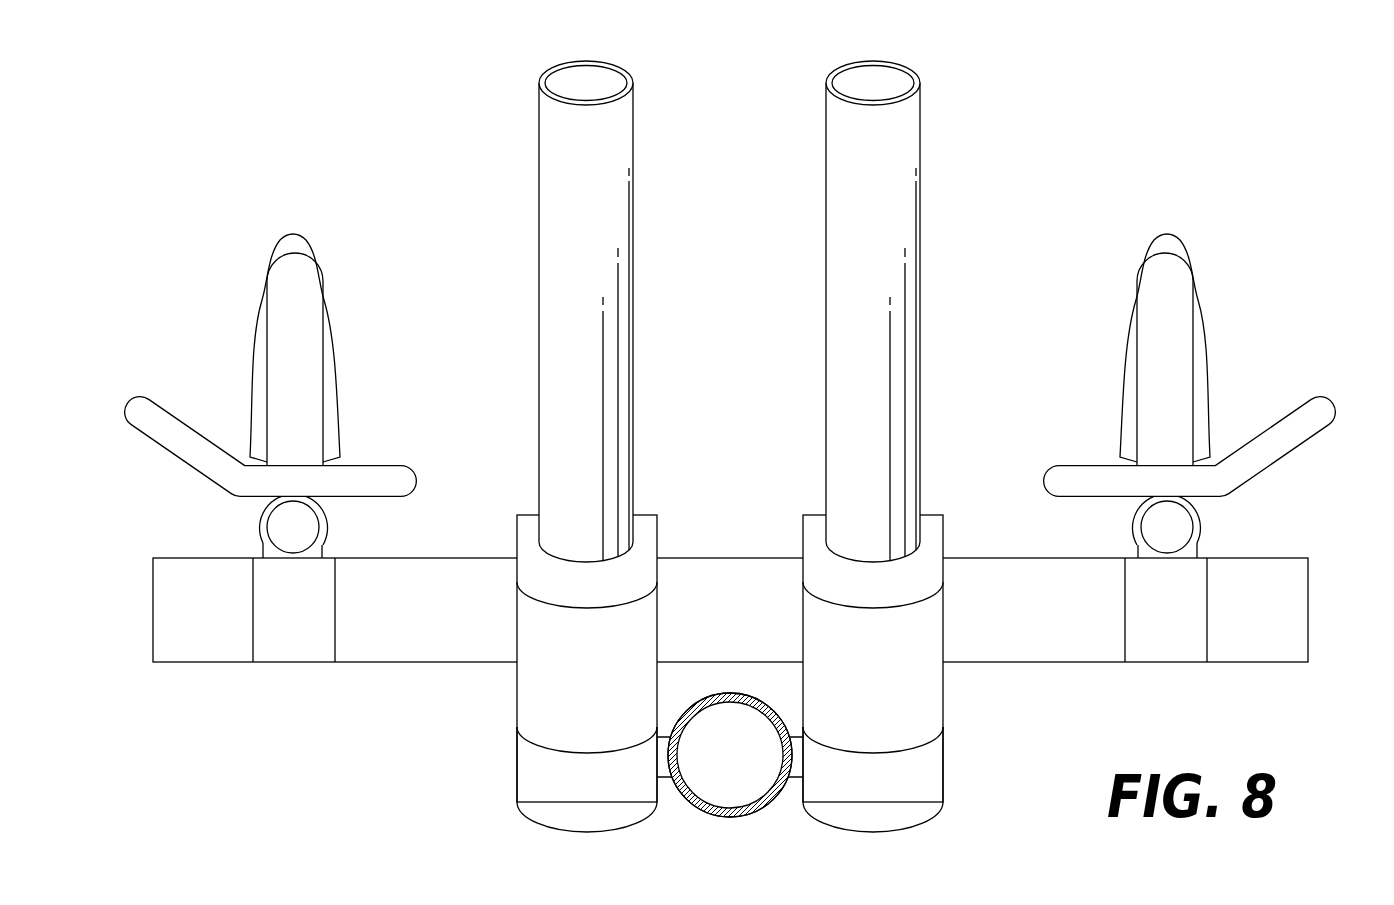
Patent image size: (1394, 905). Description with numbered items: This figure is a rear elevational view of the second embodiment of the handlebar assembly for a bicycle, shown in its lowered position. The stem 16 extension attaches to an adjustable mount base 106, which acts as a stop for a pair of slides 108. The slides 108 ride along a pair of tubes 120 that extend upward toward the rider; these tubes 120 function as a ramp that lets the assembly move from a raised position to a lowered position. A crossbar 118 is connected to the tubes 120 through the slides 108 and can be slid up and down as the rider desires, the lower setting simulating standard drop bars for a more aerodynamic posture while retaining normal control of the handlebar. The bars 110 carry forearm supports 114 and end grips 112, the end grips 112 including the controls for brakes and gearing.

The stem 16 is at (747, 815).
The adjustable mount base 106 is at (945, 770).
The slides 108 is at (945, 705).
The bars 110 is at (327, 513).
The end grips 112 is at (328, 265).
The forearm supports 114 is at (370, 465).
The crossbar 118 is at (1253, 663).
The tubes 120 is at (826, 100).